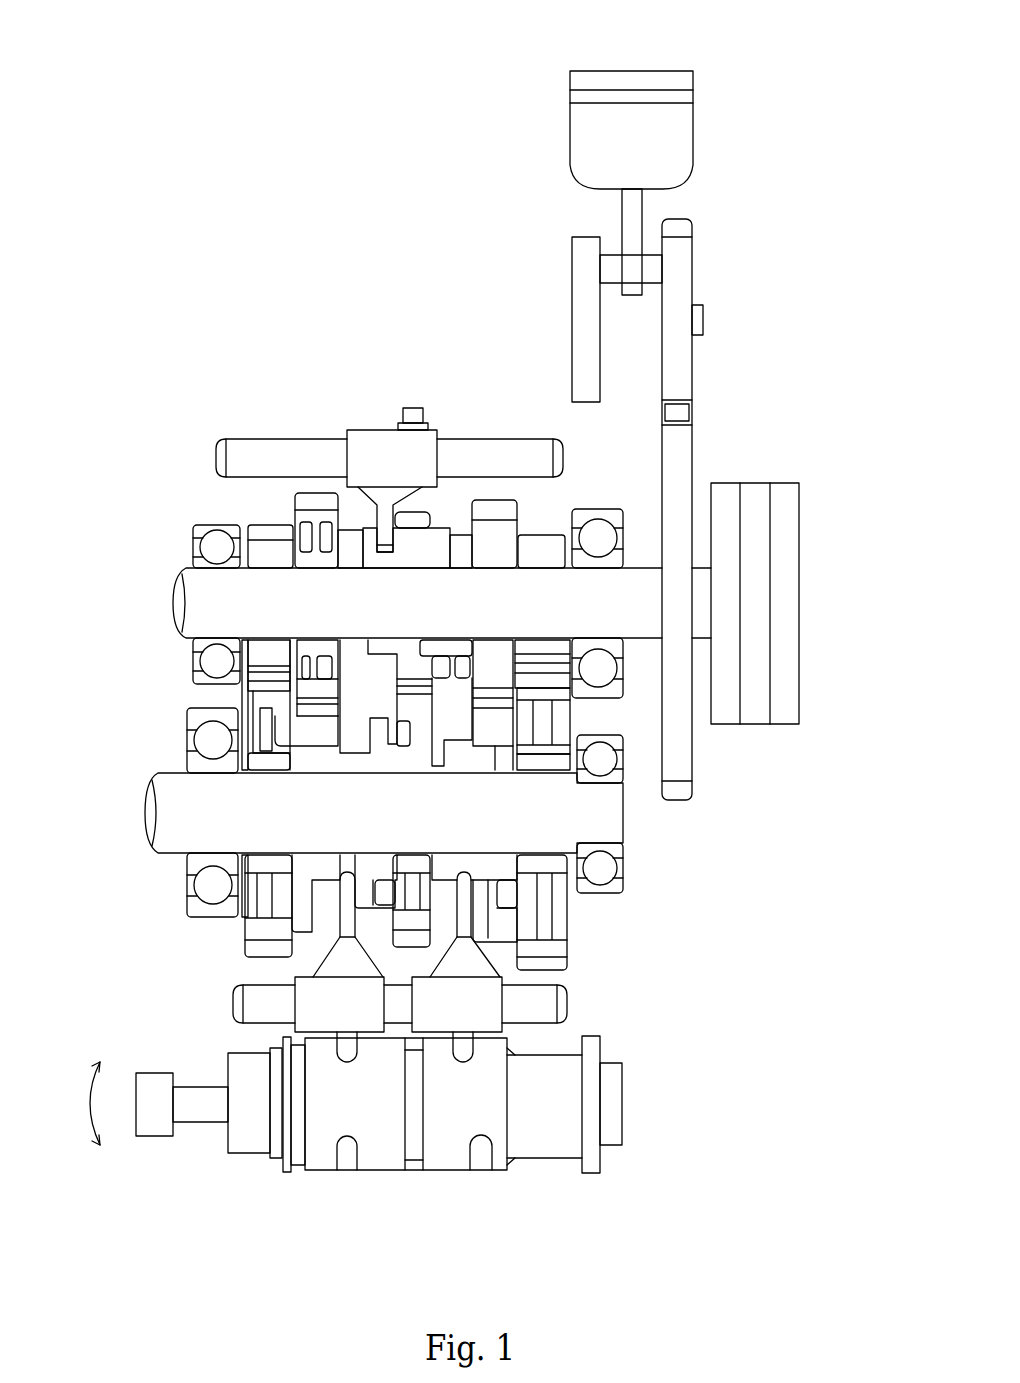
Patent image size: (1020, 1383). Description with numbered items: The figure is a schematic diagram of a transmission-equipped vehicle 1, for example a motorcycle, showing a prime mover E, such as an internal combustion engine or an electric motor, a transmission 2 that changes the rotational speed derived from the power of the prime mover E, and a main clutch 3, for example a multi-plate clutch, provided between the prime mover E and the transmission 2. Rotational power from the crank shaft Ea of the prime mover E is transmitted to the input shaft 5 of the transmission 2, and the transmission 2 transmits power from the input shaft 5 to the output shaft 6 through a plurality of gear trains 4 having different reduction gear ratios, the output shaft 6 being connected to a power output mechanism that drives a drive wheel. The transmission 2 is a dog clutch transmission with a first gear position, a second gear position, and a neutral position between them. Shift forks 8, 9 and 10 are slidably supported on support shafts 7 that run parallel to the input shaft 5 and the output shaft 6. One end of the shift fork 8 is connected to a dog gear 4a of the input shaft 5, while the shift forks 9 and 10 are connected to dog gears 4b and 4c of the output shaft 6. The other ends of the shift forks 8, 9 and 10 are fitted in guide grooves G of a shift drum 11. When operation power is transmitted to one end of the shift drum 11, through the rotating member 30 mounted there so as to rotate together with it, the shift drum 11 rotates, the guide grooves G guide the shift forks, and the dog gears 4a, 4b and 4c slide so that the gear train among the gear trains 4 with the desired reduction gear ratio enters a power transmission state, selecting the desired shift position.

The transmission-equipped vehicle 1 is at (220, 147).
The transmission 2 is at (130, 385).
The main clutch 3 is at (802, 617).
The gear trains 4 is at (222, 510).
The dog gear 4a is at (425, 519).
The dog gear 4b is at (503, 913).
The dog gear 4c is at (308, 898).
The input shaft 5 is at (186, 597).
The output shaft 6 is at (163, 810).
The support shafts 7 is at (214, 440).
The shift fork 8 is at (377, 452).
The shift fork 9 is at (522, 1034).
The shift fork 10 is at (313, 1040).
The shift drum 11 is at (505, 1150).
The rotating member 30 is at (158, 1140).
The prime mover E is at (749, 82).
The crank shaft Ea is at (698, 304).
The guide grooves G is at (472, 1157).